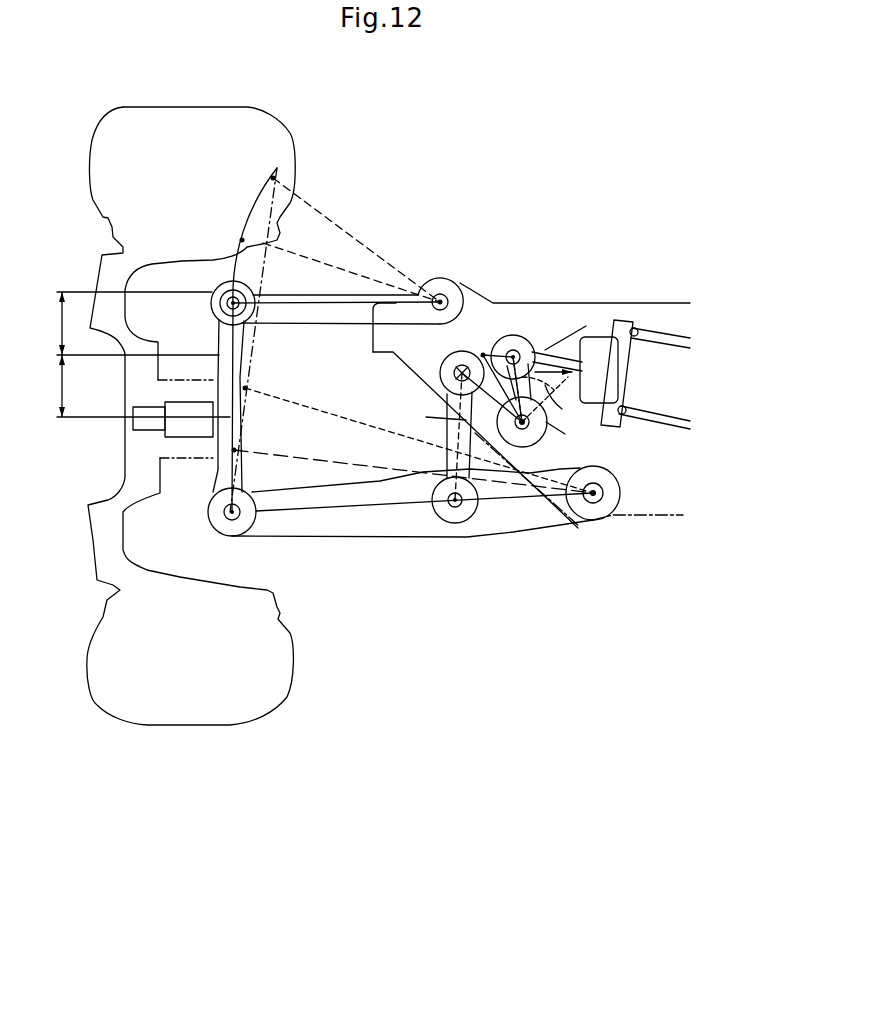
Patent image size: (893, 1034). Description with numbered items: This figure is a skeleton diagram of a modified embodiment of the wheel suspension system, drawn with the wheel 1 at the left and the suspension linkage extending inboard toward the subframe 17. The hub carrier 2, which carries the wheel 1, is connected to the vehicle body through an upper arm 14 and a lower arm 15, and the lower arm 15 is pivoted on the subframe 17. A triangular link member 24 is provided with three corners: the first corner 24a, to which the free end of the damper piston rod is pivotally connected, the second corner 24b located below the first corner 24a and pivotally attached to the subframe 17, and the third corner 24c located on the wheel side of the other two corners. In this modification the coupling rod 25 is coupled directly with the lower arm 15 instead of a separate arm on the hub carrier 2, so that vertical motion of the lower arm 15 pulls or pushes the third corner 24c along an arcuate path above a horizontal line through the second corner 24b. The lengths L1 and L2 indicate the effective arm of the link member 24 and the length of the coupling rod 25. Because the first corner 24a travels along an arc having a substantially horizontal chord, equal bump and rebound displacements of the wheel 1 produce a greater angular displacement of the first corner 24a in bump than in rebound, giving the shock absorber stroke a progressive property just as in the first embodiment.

The wheel 1 is at (294, 151).
The hub carrier 2 is at (220, 342).
The upper suspension arm 14 is at (350, 294).
The lower arm 15 is at (417, 537).
The subframe 17 is at (501, 302).
The triangular link member 24 is at (483, 354).
The first corner 24a is at (501, 342).
The second corner 24b is at (542, 442).
The third corner 24c is at (457, 368).
The coupling rod 25 is at (446, 467).
The length of bell crank arm L1 is at (567, 434).
The length of connecting rod L2 is at (431, 418).